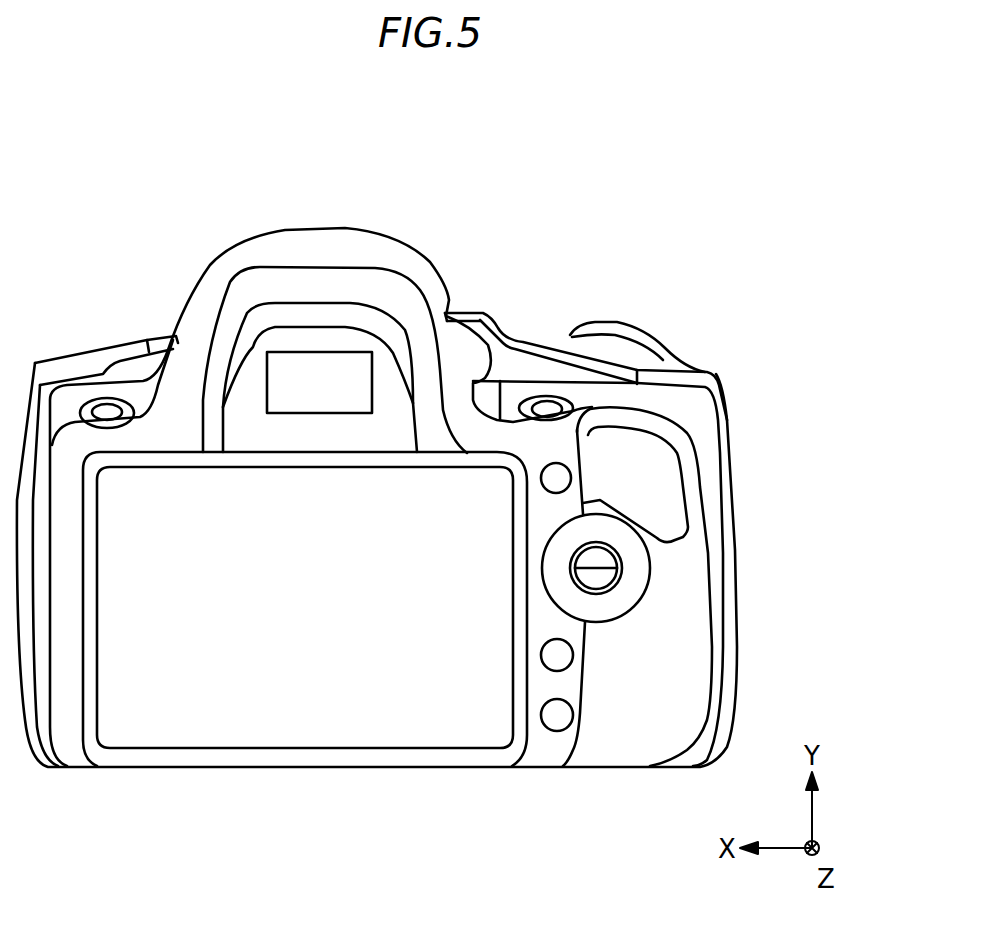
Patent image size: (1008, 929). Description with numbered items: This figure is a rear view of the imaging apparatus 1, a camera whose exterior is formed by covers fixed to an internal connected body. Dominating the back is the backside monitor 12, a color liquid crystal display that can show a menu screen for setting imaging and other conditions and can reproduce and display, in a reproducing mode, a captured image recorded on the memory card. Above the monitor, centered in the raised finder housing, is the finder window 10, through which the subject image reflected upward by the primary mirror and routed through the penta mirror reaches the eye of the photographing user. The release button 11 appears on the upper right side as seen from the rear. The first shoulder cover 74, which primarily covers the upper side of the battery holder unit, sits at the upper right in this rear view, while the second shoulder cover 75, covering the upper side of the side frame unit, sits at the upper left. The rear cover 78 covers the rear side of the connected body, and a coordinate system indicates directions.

The imaging apparatus 1 is at (753, 155).
The finder window 10 is at (317, 360).
The release button 11 is at (623, 322).
The backside monitor 12 is at (313, 727).
The first shoulder cover 74 is at (527, 340).
The second shoulder cover 75 is at (148, 338).
The rear cover 78 is at (672, 685).